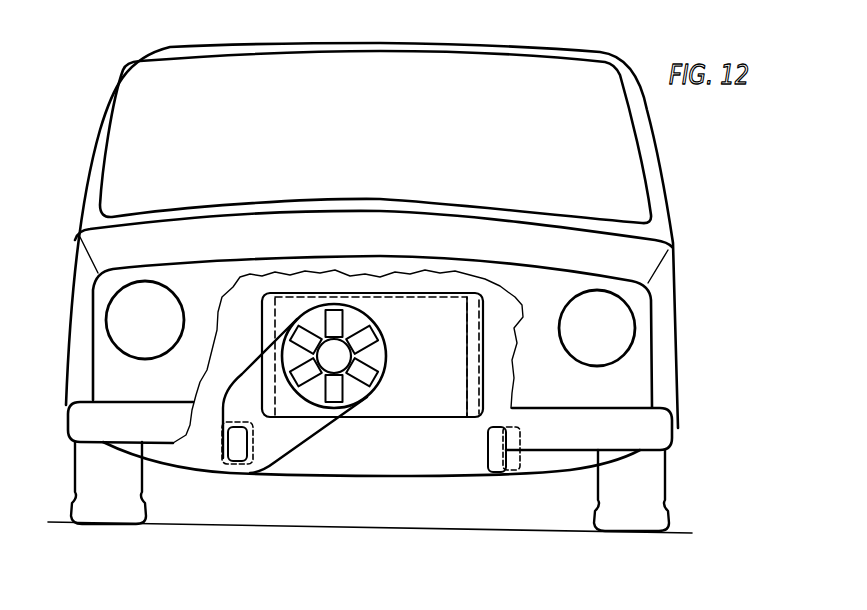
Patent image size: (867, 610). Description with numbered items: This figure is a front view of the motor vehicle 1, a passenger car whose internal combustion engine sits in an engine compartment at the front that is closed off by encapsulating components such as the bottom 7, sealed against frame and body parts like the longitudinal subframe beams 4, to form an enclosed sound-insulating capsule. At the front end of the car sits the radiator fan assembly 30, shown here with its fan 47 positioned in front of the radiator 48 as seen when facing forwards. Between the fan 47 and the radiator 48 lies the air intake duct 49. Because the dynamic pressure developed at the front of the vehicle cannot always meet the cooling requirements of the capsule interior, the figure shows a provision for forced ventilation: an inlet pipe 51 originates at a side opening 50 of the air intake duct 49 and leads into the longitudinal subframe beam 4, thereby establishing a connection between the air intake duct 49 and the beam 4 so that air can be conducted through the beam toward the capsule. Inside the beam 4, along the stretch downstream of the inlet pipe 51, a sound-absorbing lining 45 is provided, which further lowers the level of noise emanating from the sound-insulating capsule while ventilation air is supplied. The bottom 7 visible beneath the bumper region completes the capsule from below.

The motor vehicle 1 is at (208, 108).
The longitudinal subframe beam 4 is at (218, 453).
The bottom 7 is at (565, 474).
The radiator fan assembly 30 is at (356, 419).
The sound-absorbing lining 45 is at (242, 468).
The fan 47 is at (377, 387).
The radiator 48 is at (460, 320).
The air intake duct 49 is at (388, 357).
The side opening 50 is at (313, 408).
The inlet pipe 51 is at (253, 380).